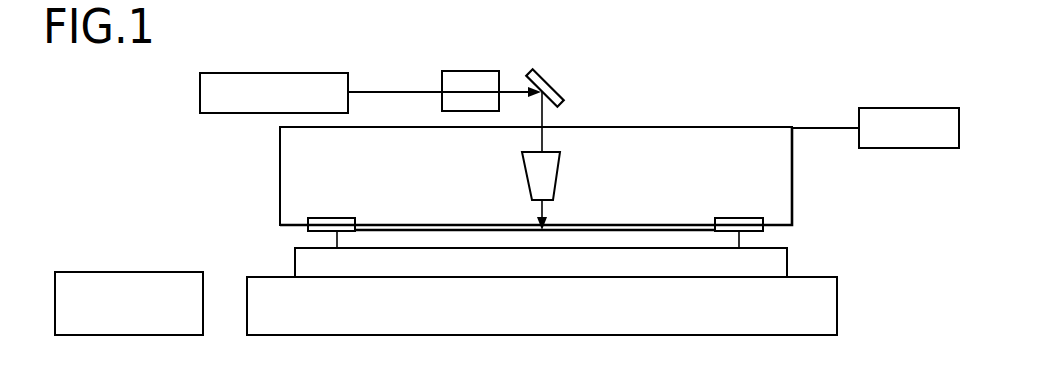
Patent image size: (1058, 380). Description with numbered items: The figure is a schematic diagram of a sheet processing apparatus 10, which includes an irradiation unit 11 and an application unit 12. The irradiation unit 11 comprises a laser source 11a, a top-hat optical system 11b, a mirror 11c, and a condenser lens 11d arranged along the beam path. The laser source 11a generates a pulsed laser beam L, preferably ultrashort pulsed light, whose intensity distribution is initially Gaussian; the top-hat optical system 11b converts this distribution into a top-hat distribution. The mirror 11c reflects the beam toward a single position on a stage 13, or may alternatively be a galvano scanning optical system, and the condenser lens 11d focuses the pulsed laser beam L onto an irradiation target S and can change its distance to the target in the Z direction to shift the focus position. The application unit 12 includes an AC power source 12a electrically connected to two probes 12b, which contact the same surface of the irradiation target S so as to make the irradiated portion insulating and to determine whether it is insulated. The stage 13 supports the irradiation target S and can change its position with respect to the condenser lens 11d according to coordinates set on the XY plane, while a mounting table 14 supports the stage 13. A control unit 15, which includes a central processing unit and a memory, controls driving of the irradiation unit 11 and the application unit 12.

The sheet processing apparatus 10 is at (832, 86).
The irradiation unit 11 is at (196, 141).
The laser source 11a is at (200, 91).
The top-hat optical system 11b is at (475, 71).
The mirror 11c is at (560, 82).
The condenser lens 11d is at (562, 175).
The application unit 12 is at (848, 224).
The AC power source 12a is at (910, 148).
The probes 12b is at (333, 218).
The stage 13 is at (293, 263).
The mounting table 14 is at (540, 335).
The control unit 15 is at (128, 335).
The irradiation target S is at (437, 228).
The pulsed laser beam L is at (532, 205).